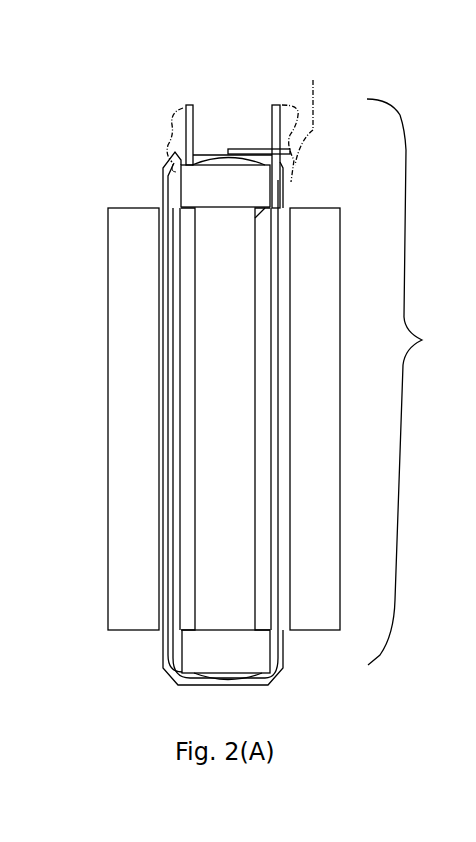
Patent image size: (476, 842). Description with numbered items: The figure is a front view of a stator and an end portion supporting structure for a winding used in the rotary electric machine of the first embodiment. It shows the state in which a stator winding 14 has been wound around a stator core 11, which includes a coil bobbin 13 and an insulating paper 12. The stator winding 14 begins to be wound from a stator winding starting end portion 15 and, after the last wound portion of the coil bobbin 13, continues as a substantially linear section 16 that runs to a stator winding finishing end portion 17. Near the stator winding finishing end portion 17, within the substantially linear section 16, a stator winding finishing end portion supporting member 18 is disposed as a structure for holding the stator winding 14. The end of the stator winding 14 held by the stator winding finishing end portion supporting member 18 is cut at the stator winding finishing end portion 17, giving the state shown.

The stator core 11 is at (242, 228).
The insulating paper 12 is at (135, 295).
The coil bobbin 13 is at (257, 185).
The stator winding 14 is at (172, 200).
The stator winding starting end portion 15 is at (170, 110).
The substantially linear section 16 is at (420, 382).
The stator winding finishing end portion 17 is at (312, 80).
The stator winding finishing end portion supporting member 18 is at (246, 148).